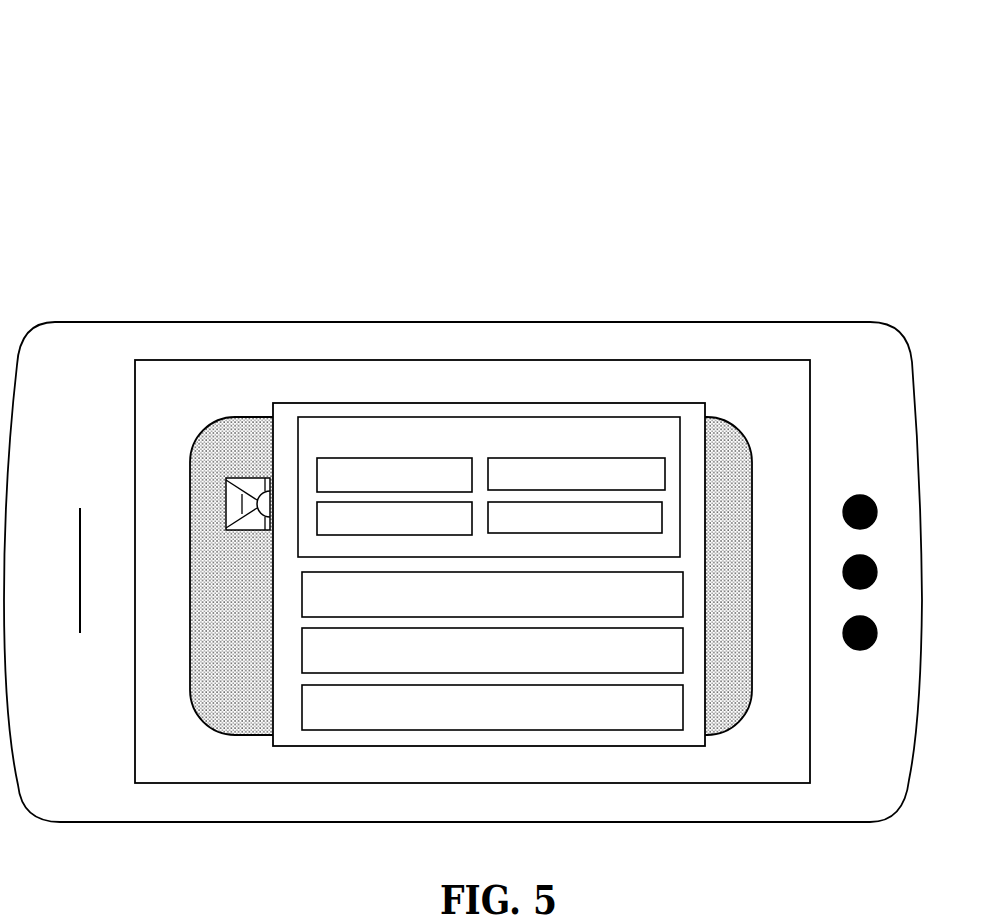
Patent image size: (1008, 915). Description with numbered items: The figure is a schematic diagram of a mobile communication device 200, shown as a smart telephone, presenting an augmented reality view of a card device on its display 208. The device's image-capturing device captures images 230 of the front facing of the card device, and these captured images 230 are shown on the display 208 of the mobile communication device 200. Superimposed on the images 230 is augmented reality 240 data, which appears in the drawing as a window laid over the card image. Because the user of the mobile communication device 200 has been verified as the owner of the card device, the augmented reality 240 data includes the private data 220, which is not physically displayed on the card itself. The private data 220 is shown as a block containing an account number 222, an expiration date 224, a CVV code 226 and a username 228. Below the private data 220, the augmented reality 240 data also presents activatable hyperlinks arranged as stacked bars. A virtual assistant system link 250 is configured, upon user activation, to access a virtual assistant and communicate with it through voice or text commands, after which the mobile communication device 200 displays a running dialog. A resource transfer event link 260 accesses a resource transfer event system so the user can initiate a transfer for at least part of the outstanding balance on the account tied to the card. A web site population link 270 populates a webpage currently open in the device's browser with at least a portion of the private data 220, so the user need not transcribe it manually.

The mobile communication device 200 is at (463, 421).
The display 208 is at (158, 427).
The images 230 is at (223, 457).
The augmented reality data 240 is at (489, 466).
The private data 220 is at (569, 446).
The account number 222 is at (463, 486).
The expiration date 224 is at (643, 485).
The CVV code 226 is at (459, 529).
The username 228 is at (646, 528).
The virtual assistant system link 250 is at (663, 606).
The resource transfer event link 260 is at (666, 661).
The web site population link 270 is at (634, 716).